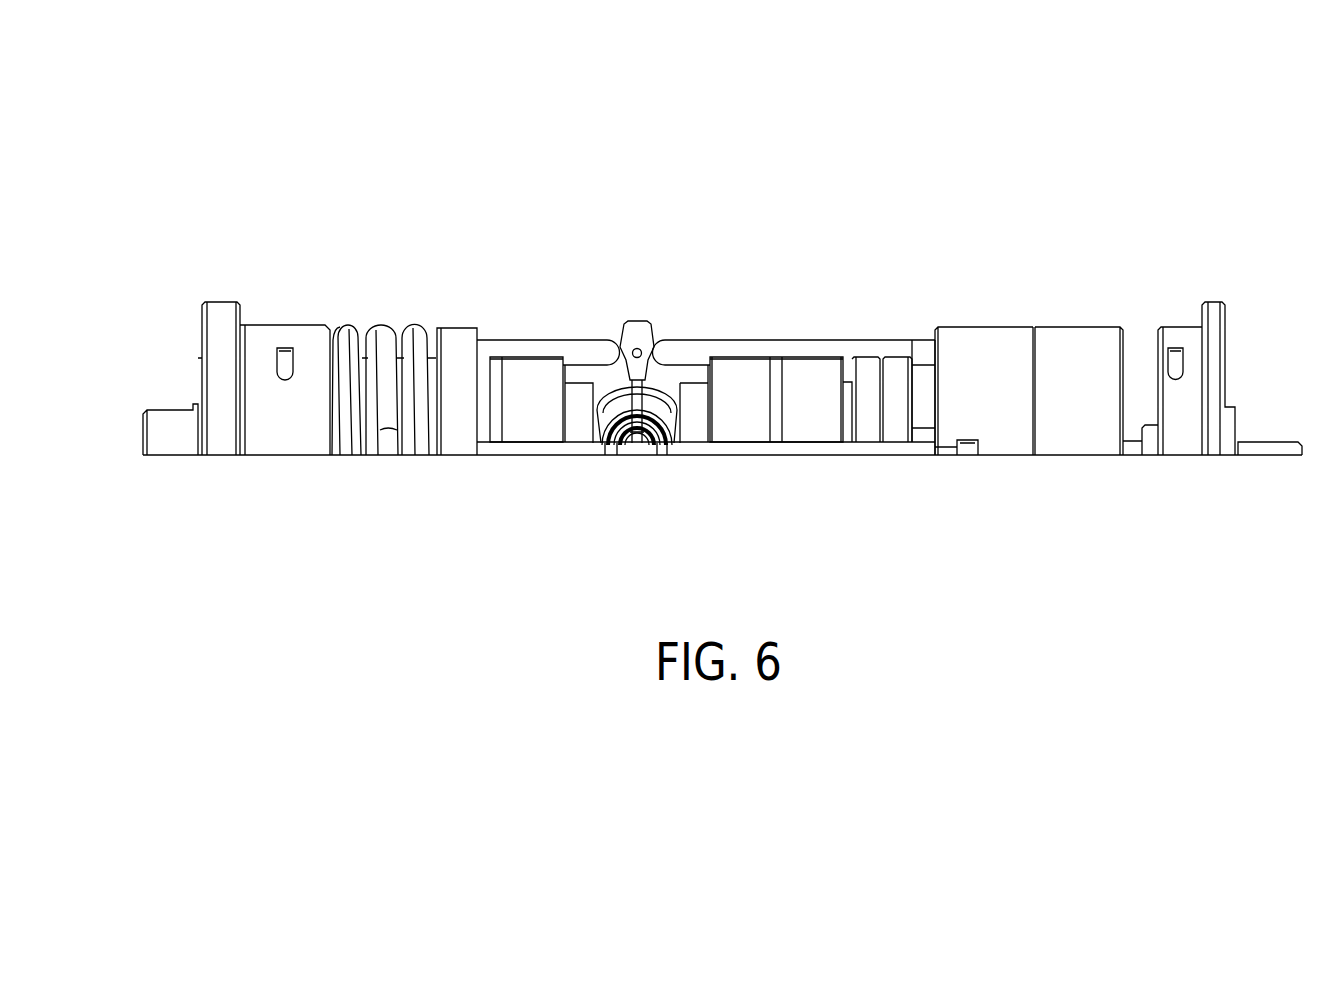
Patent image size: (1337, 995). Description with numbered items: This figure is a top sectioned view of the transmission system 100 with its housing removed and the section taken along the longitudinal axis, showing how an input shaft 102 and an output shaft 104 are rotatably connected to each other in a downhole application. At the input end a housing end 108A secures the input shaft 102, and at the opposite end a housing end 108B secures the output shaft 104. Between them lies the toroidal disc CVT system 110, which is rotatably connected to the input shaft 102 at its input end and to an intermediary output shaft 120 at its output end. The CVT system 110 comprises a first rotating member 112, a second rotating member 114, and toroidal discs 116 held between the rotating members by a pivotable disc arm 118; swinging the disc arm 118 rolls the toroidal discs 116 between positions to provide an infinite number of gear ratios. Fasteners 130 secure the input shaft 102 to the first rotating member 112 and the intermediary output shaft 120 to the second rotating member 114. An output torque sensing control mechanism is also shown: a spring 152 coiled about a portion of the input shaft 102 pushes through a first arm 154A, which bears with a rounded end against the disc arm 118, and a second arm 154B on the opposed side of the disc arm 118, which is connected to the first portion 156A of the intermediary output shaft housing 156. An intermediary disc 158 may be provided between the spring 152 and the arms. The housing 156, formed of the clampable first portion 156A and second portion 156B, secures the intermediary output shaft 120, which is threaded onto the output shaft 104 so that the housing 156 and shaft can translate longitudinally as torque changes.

The transmission system 100 is at (370, 168).
The input shaft 102 is at (163, 432).
The output shaft 104 is at (1263, 458).
The housing end 108A is at (252, 337).
The housing end 108B is at (1190, 340).
The CVT system 110 is at (622, 300).
The first rotating member 112 is at (583, 440).
The second rotating member 114 is at (867, 370).
The toroidal discs 116 is at (653, 387).
The disc arm 118 is at (635, 337).
The intermediary output shaft 120 is at (925, 383).
The fasteners 130 is at (967, 457).
The spring 152 is at (377, 335).
The first arm 154A is at (532, 345).
The second arm 154B is at (750, 350).
The intermediary output shaft housing 156 is at (1048, 308).
The first portion 156A is at (978, 350).
The second portion 156B is at (1075, 352).
The intermediary disc 158 is at (458, 340).